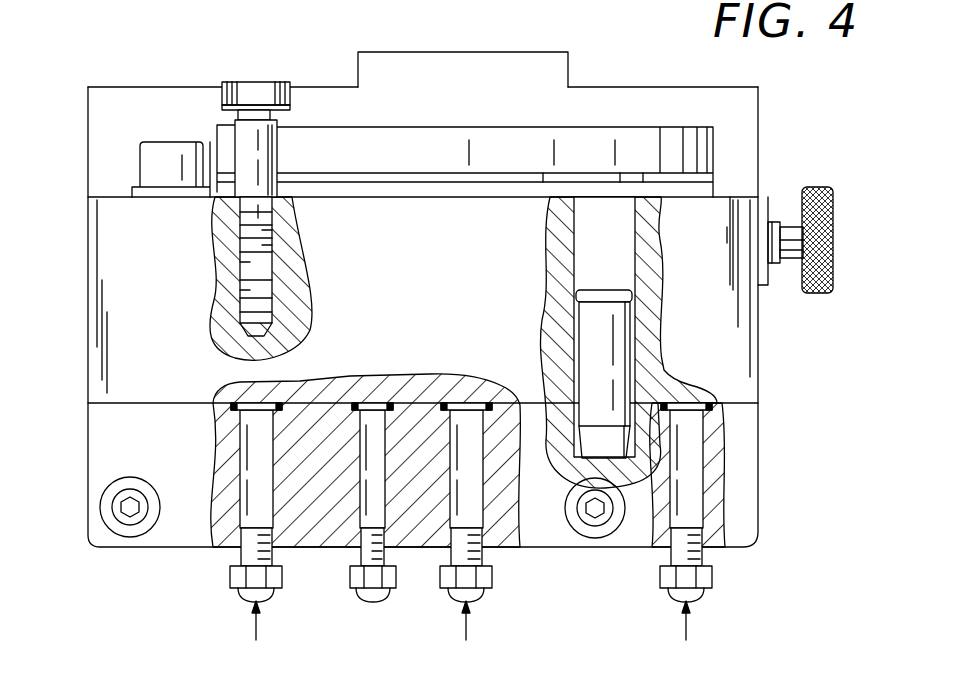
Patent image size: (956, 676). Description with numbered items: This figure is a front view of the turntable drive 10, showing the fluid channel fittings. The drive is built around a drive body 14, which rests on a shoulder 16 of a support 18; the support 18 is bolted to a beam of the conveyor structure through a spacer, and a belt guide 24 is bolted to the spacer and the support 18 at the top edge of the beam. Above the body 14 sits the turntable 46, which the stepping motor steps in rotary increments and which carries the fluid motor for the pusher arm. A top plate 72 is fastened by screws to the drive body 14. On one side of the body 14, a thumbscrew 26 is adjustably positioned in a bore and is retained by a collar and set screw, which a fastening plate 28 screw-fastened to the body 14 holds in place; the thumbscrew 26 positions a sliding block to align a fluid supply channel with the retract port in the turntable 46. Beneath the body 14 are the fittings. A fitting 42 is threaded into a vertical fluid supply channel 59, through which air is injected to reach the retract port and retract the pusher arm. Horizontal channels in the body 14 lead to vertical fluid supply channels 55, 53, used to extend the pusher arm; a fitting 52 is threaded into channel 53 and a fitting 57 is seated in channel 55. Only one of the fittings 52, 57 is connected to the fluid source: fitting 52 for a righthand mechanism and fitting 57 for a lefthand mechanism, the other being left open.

The turntable drive 10 is at (180, 68).
The support 18 is at (88, 88).
The belt guide 24 is at (568, 52).
The drive body 14 is at (84, 268).
The shoulder 16 is at (105, 403).
The turntable 46 is at (340, 127).
The top plate 72 is at (628, 182).
The fastening plate 28 is at (765, 197).
The thumbscrew 26 is at (814, 187).
The vertical fluid supply channel 53 is at (250, 443).
The fitting 52 is at (238, 567).
The vertical fluid supply channel 59 is at (470, 410).
The fitting 42 is at (490, 578).
The vertical fluid supply channel 55 is at (697, 473).
The fitting 57 is at (710, 575).